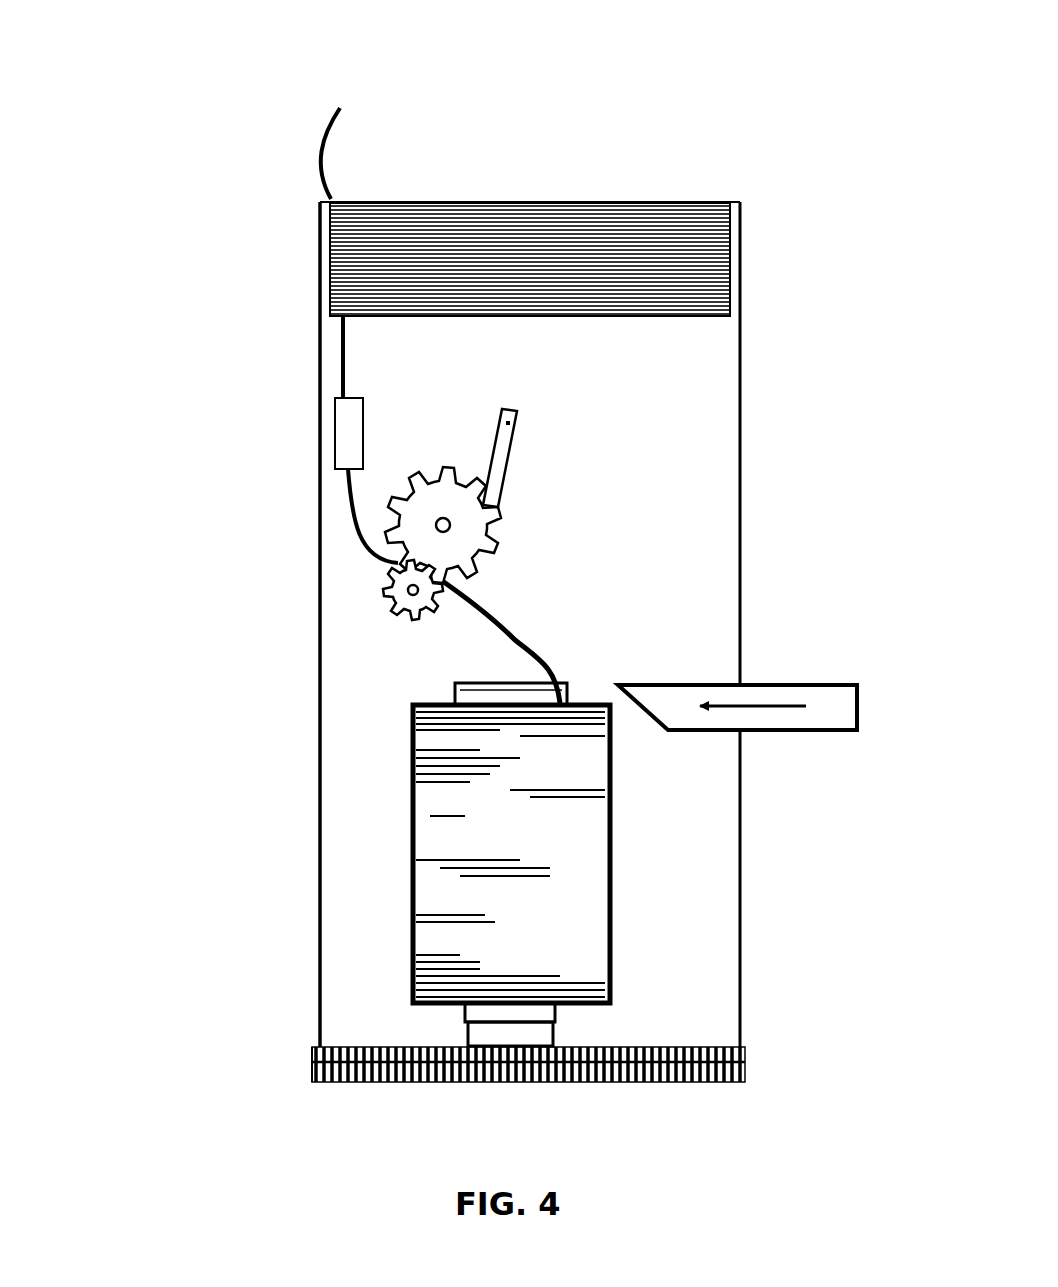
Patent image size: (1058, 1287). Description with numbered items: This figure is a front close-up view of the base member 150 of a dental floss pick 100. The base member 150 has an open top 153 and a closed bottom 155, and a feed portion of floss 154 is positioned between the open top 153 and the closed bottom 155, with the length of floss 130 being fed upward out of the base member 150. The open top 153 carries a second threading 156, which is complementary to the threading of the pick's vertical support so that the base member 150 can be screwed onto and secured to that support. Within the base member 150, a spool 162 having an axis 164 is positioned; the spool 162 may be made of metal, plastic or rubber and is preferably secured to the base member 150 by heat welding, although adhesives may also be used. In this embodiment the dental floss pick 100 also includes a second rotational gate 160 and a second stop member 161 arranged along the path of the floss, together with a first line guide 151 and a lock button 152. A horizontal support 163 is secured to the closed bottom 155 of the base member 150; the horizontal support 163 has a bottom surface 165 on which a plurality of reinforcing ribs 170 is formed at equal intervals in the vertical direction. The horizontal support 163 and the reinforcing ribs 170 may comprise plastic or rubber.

The dental floss pick 100 is at (112, 53).
The length of floss 130 is at (303, 158).
The base member 150 is at (817, 606).
The first line guide 151 is at (315, 421).
The lock button 152 is at (876, 729).
The open top 153 is at (303, 209).
The feed portion of floss 154 is at (630, 838).
The closed bottom 155 is at (680, 1041).
The second threading 156 is at (762, 235).
The second rotational gate 160 is at (380, 588).
The second stop member 161 is at (530, 453).
The spool 162 is at (466, 1033).
The horizontal support 163 is at (316, 1053).
The axis 164 is at (466, 1012).
The bottom surface 165 is at (316, 1064).
The reinforcing ribs 170 is at (754, 1066).